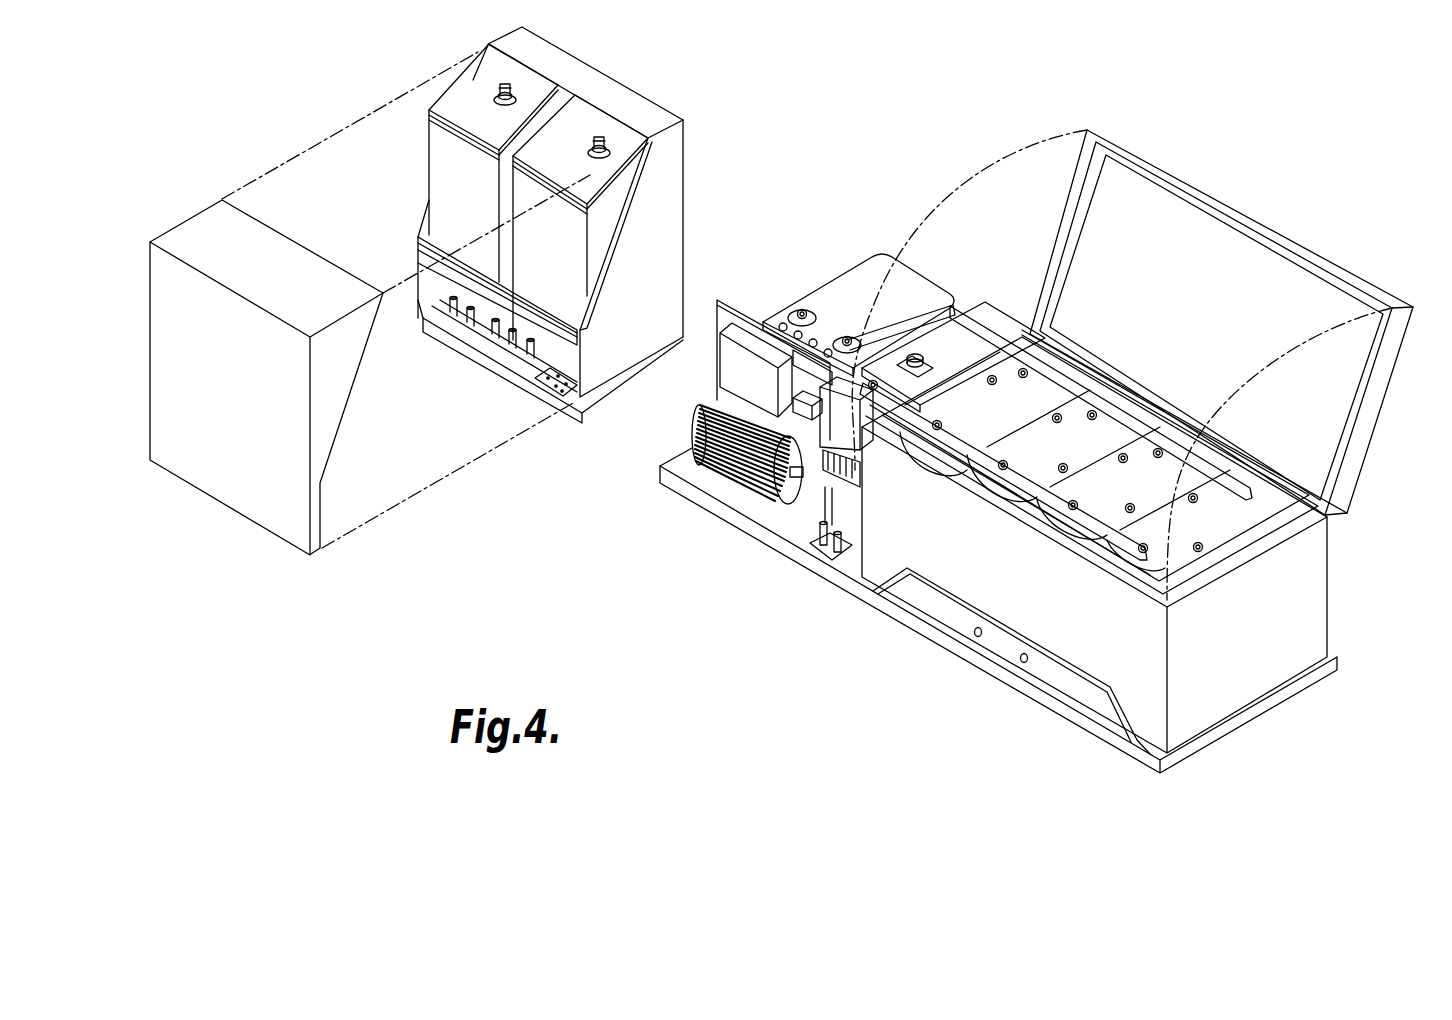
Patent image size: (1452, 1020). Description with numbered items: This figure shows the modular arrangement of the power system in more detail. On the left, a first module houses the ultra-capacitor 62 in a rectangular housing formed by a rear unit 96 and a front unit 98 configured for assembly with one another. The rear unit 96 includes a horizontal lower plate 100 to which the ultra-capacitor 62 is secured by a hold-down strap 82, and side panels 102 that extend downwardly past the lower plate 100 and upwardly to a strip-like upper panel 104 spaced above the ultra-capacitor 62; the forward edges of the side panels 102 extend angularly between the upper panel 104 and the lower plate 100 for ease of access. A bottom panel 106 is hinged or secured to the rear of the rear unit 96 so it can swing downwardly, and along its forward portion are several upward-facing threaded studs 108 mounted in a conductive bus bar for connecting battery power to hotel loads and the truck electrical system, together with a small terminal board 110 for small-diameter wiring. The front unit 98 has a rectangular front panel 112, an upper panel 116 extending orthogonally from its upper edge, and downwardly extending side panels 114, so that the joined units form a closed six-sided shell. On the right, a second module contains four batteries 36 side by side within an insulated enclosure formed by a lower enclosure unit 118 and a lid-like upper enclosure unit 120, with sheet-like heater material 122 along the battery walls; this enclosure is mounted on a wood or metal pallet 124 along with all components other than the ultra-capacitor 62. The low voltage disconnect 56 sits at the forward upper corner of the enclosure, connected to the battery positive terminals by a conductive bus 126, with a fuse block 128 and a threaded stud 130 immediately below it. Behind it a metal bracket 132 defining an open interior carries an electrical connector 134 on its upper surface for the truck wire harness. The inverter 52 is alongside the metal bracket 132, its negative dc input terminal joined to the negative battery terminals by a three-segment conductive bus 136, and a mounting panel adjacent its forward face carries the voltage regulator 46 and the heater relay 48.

The batteries 36 is at (975, 427).
The voltage regulator 46 is at (730, 363).
The heater relay 48 is at (807, 407).
The inverter 52 is at (858, 285).
The low voltage disconnect 56 is at (788, 492).
The ultra-capacitor 62 is at (542, 90).
The hold-down strap 82 is at (582, 110).
The rear unit 96 is at (551, 244).
The front unit 98 is at (265, 387).
The lower plate 100 is at (418, 260).
The side panels 102 is at (665, 262).
The strip-like upper panel 104 is at (655, 108).
The bottom panel 106 is at (600, 405).
The threaded studs 108 is at (458, 342).
The small terminal board 110 is at (548, 382).
The front panel 112 is at (225, 422).
The side panels 114 is at (333, 400).
The upper panel 116 is at (265, 255).
The lower enclosure unit 118 is at (1250, 665).
The upper enclosure unit 120 is at (1360, 448).
The sheet-like heater material 122 is at (1225, 470).
The pallet 124 is at (1197, 733).
The conductive bus 126 is at (1028, 480).
The fuse block 128 is at (825, 470).
The threaded stud 130 is at (820, 550).
The metal bracket 132 is at (987, 320).
The electrical connector 134 is at (918, 358).
The conductive bus 136 is at (897, 330).